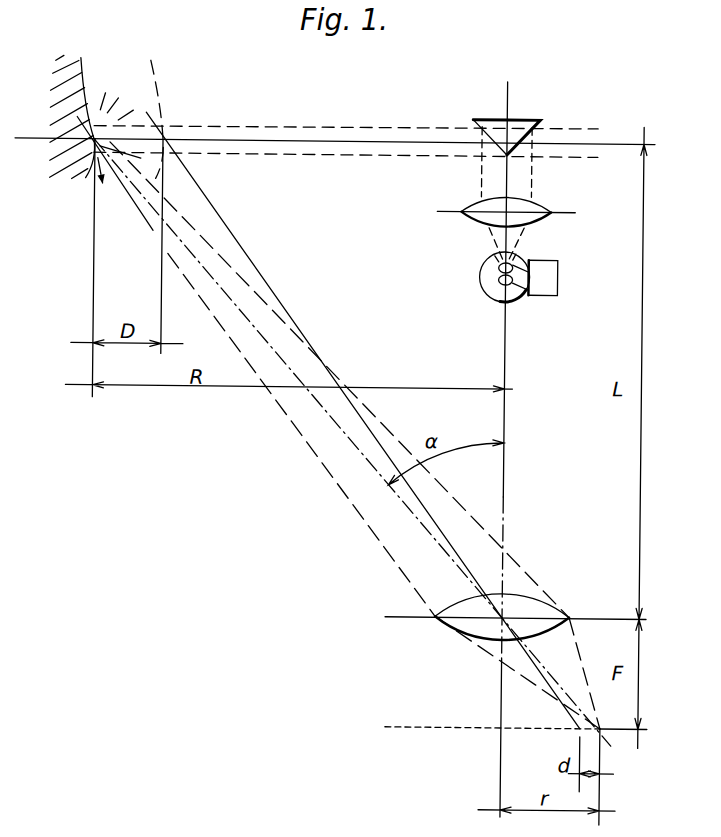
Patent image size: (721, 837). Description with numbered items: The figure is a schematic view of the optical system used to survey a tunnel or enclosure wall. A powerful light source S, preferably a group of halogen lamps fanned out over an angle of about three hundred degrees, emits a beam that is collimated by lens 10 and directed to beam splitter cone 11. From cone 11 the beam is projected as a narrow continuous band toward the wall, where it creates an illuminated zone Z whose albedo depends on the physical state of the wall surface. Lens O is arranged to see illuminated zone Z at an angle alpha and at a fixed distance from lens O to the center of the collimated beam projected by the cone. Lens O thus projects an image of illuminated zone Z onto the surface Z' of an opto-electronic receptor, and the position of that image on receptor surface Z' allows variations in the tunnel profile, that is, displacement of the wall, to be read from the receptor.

The lens 10 is at (466, 202).
The beam splitter cone 11 is at (538, 121).
The light source S is at (479, 272).
The lens O is at (507, 617).
The illuminated zone Z is at (96, 114).
The receptor surface Z' is at (505, 724).